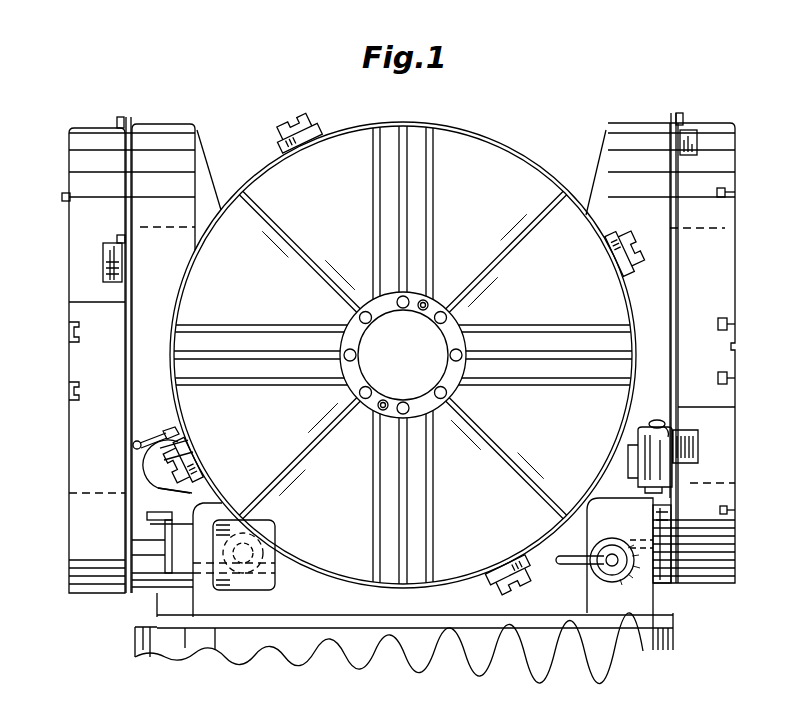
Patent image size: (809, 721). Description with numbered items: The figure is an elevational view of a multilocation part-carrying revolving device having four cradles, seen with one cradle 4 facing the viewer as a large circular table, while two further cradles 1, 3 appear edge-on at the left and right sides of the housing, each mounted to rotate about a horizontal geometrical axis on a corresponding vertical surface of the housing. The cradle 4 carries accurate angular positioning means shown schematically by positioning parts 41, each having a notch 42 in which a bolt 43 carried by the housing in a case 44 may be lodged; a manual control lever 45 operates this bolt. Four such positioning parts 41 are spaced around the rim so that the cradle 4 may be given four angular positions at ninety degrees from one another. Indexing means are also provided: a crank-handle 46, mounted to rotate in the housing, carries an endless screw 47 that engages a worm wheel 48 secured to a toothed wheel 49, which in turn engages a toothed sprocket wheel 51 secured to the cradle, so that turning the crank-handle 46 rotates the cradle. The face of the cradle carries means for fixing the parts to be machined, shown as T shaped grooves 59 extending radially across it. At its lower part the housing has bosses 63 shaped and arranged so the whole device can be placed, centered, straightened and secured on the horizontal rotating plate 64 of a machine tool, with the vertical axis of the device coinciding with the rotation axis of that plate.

The cradle 1 is at (68, 412).
The cradle 3 is at (742, 242).
The cradle 4 is at (637, 394).
The positioning part 41 is at (284, 147).
The notch 42 is at (300, 122).
The bolt 43 is at (170, 486).
The case 44 is at (150, 462).
The manual control lever 45 is at (144, 437).
The crank-handle 46 is at (166, 530).
The endless screw 47 is at (238, 590).
The worm wheel 48 is at (262, 530).
The toothed wheel 49 is at (268, 572).
The toothed sprocket wheel 51 is at (265, 546).
The T shaped grooves 59 is at (568, 377).
The bosses 63 is at (650, 616).
The horizontal rotating plate of a machine tool 64 is at (135, 627).